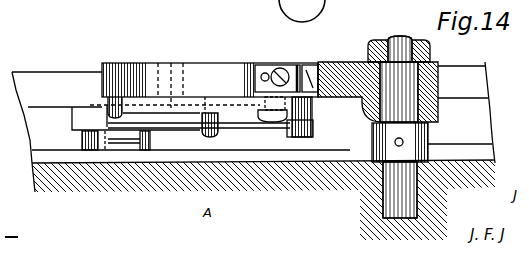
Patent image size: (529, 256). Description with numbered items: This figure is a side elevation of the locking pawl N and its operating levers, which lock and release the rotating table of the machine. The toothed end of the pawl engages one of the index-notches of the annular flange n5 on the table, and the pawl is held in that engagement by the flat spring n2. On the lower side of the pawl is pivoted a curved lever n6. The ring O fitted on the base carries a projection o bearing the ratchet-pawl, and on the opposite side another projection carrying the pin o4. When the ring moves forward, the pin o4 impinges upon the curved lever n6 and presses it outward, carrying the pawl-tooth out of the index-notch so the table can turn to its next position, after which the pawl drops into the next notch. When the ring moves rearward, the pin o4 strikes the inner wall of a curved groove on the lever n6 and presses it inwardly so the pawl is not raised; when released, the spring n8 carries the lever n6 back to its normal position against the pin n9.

The annular flange n5 is at (60, 78).
The pin n9 is at (99, 100).
The pin o4 is at (102, 118).
The projection o is at (80, 143).
The lever n6 is at (205, 105).
The flat spring n2 is at (307, 62).
The spring n8 is at (246, 132).